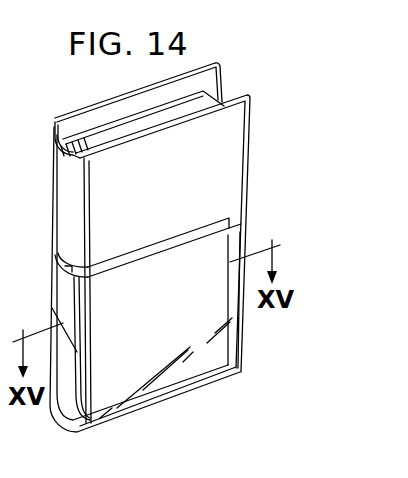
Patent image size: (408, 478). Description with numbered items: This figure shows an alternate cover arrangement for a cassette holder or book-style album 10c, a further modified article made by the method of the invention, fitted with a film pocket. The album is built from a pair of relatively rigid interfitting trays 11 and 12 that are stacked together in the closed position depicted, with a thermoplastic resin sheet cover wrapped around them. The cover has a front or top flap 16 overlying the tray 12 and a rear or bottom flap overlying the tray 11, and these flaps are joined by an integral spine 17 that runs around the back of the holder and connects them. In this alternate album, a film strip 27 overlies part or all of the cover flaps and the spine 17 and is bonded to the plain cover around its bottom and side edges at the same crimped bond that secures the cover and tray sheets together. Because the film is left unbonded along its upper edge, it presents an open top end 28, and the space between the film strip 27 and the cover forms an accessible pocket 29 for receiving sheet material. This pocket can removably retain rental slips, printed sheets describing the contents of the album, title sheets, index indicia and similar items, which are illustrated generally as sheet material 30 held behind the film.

The album 10c is at (256, 115).
The tray 11 is at (139, 116).
The tray 12 is at (161, 79).
The front or top flap 16 is at (240, 157).
The spine 17 is at (63, 186).
The film strip 27 is at (190, 360).
The open top end 28 is at (245, 220).
The pocket 29 is at (167, 246).
The sheet material 30 is at (67, 260).